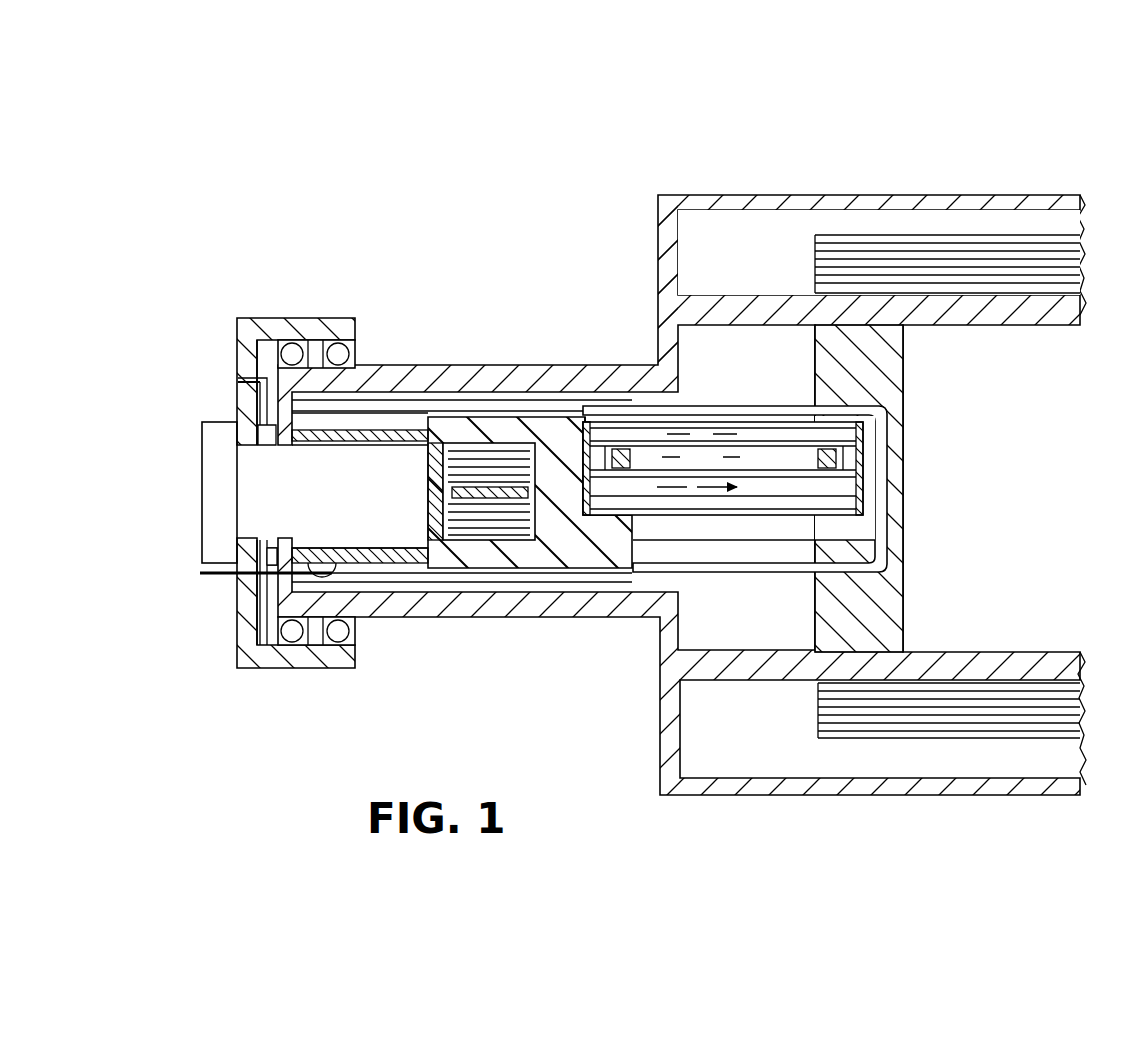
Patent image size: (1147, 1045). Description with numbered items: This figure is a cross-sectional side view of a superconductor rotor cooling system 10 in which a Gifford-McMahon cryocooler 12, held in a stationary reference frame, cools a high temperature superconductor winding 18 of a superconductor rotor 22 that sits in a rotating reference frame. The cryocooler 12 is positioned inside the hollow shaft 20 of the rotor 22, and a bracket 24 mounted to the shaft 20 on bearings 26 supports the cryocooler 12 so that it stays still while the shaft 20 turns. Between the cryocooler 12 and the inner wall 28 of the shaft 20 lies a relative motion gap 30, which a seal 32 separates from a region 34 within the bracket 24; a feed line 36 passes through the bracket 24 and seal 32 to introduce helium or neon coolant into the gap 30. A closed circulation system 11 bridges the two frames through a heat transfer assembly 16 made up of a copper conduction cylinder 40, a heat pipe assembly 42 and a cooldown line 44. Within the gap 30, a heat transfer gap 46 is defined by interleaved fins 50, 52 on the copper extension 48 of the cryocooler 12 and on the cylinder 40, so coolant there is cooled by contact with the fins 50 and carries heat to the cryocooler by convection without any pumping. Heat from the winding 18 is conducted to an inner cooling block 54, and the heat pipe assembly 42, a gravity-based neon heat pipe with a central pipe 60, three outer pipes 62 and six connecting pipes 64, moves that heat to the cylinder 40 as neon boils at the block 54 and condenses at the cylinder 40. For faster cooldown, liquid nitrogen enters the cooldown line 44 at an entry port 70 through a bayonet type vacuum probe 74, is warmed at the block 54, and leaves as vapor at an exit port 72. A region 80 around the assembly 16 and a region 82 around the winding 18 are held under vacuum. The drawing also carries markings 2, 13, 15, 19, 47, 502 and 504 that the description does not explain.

The section line 2- 2 is at (858, 182).
The superconductor rotor cooling system 10 is at (490, 338).
The closed circulation system 11 is at (665, 595).
The cryocooler 12 is at (200, 510).
The axis of rotation 13 is at (178, 443).
The air gap 15 is at (1050, 172).
The heat transfer assembly 16 is at (720, 400).
The high temperature superconductor winding 18 is at (1080, 218).
The cavity 19 is at (686, 277).
The hollow shaft 20 is at (405, 618).
The superconductor rotor 22 is at (688, 195).
The bracket 24 is at (245, 668).
The bearings 26 is at (355, 342).
The inner wall 28 is at (318, 550).
The relative motion gap 30 is at (280, 540).
The seal 32 is at (240, 622).
The region 34 is at (255, 318).
The feed line 36 is at (238, 376).
The conduction cylinder 40 is at (558, 590).
The heat pipe assembly 42 is at (890, 420).
The cooldown line 44 is at (705, 580).
The heat transfer gap 46 is at (505, 540).
The winding 47 is at (468, 540).
The copper extension 48 is at (428, 468).
The fins 50 is at (440, 503).
The fins 52 is at (598, 560).
The inner cooling block 54 is at (905, 610).
The central pipe 60 is at (745, 500).
The outer pipes 62 is at (768, 413).
The connecting pipes 64 is at (548, 415).
The entry port 70 is at (235, 590).
The exit port 72 is at (245, 405).
The bayonet type vacuum probe 74 is at (230, 572).
The region 80 is at (697, 348).
The region 82 is at (736, 250).
The first layer 502 is at (727, 463).
The second layer 504 is at (705, 458).